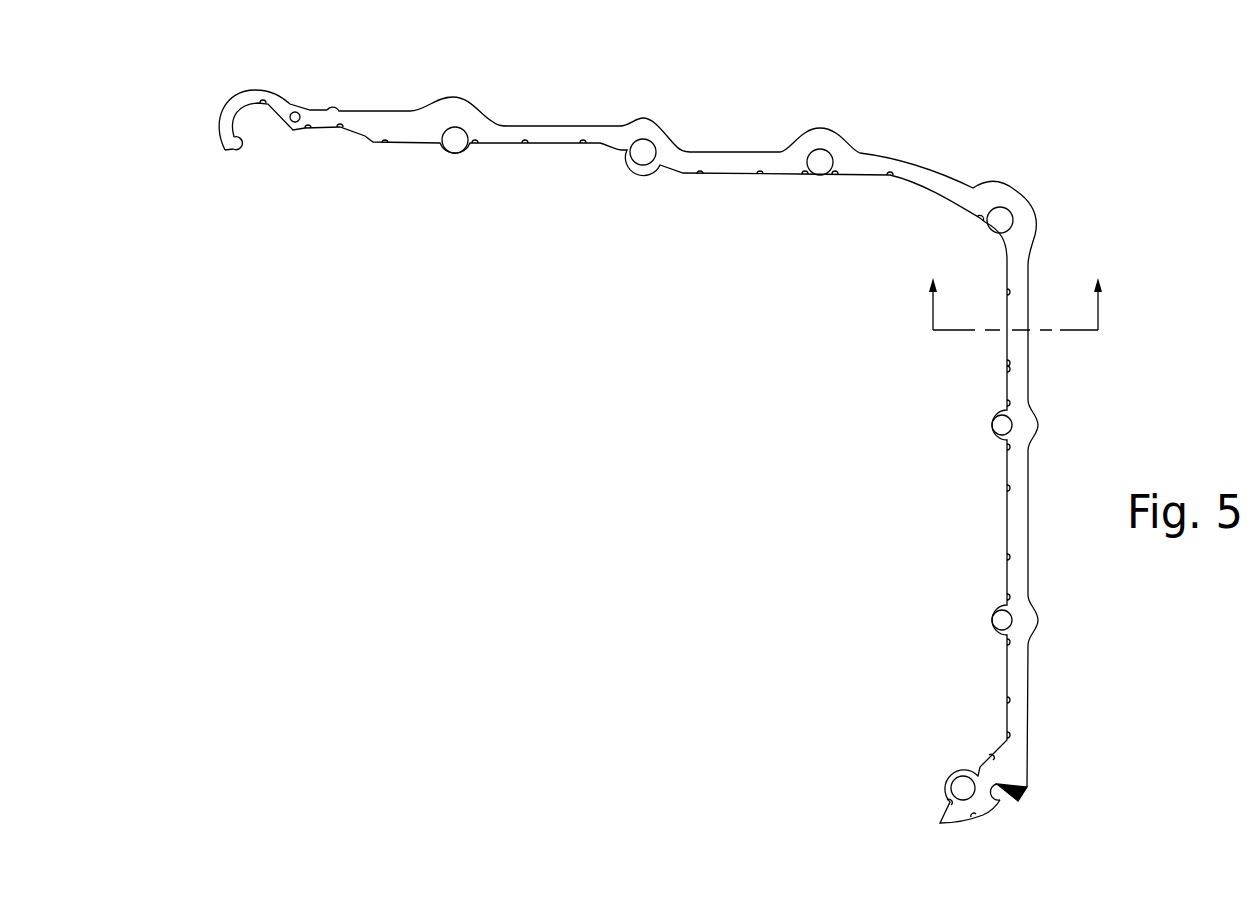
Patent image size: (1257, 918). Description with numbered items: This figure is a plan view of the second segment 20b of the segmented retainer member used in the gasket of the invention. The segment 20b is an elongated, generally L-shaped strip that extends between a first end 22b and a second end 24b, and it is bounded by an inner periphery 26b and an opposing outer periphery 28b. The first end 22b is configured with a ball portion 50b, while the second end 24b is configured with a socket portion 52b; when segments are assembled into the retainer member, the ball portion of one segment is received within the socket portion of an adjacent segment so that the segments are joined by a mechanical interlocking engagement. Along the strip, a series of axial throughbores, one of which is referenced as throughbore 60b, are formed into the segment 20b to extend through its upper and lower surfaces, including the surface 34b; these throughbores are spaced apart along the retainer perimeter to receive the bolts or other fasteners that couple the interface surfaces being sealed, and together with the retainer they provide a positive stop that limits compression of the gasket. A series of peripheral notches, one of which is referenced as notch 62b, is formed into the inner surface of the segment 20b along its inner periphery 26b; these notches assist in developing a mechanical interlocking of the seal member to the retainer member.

The second segment 20b is at (1154, 112).
The first end 22b is at (222, 132).
The second end 24b is at (950, 777).
The inner periphery 26b is at (601, 150).
The outer periphery 28b is at (590, 124).
The upper surface 34b is at (725, 164).
The ball portion 50b is at (245, 152).
The socket portion 52b is at (1023, 790).
The axial throughbore 60b is at (460, 133).
The peripheral notch 62b is at (1007, 372).